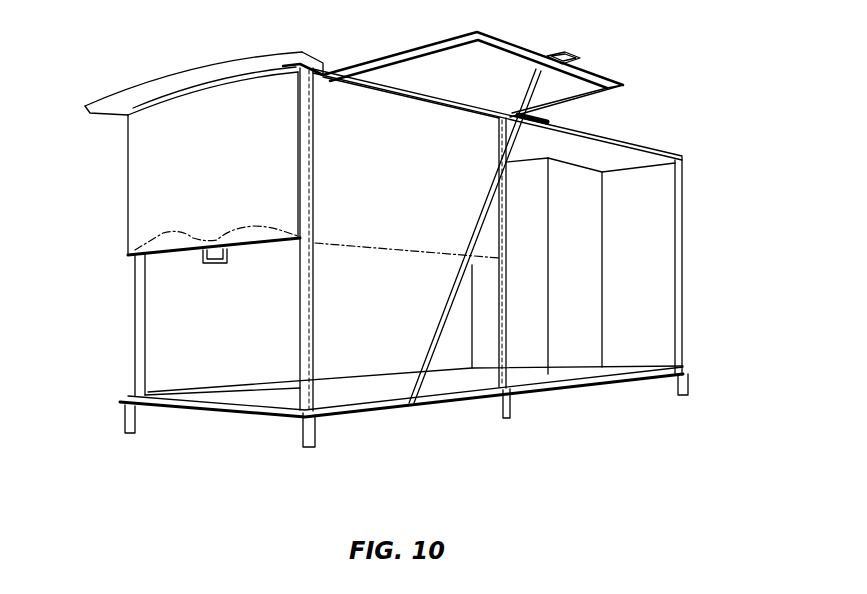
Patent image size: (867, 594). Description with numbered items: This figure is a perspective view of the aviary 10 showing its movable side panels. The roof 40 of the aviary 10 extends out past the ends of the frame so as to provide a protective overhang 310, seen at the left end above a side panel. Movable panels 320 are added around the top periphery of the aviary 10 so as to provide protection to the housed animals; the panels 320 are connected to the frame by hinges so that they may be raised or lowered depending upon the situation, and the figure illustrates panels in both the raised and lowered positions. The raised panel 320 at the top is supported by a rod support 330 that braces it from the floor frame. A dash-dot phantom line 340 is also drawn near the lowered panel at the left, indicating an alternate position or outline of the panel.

The aviary 10 is at (672, 78).
The roof 40 is at (198, 70).
The protective overhang 310 is at (106, 116).
The movable panels 320 is at (500, 38).
The rod support 330 is at (436, 334).
The phantom line of stowed panel 340 is at (163, 233).